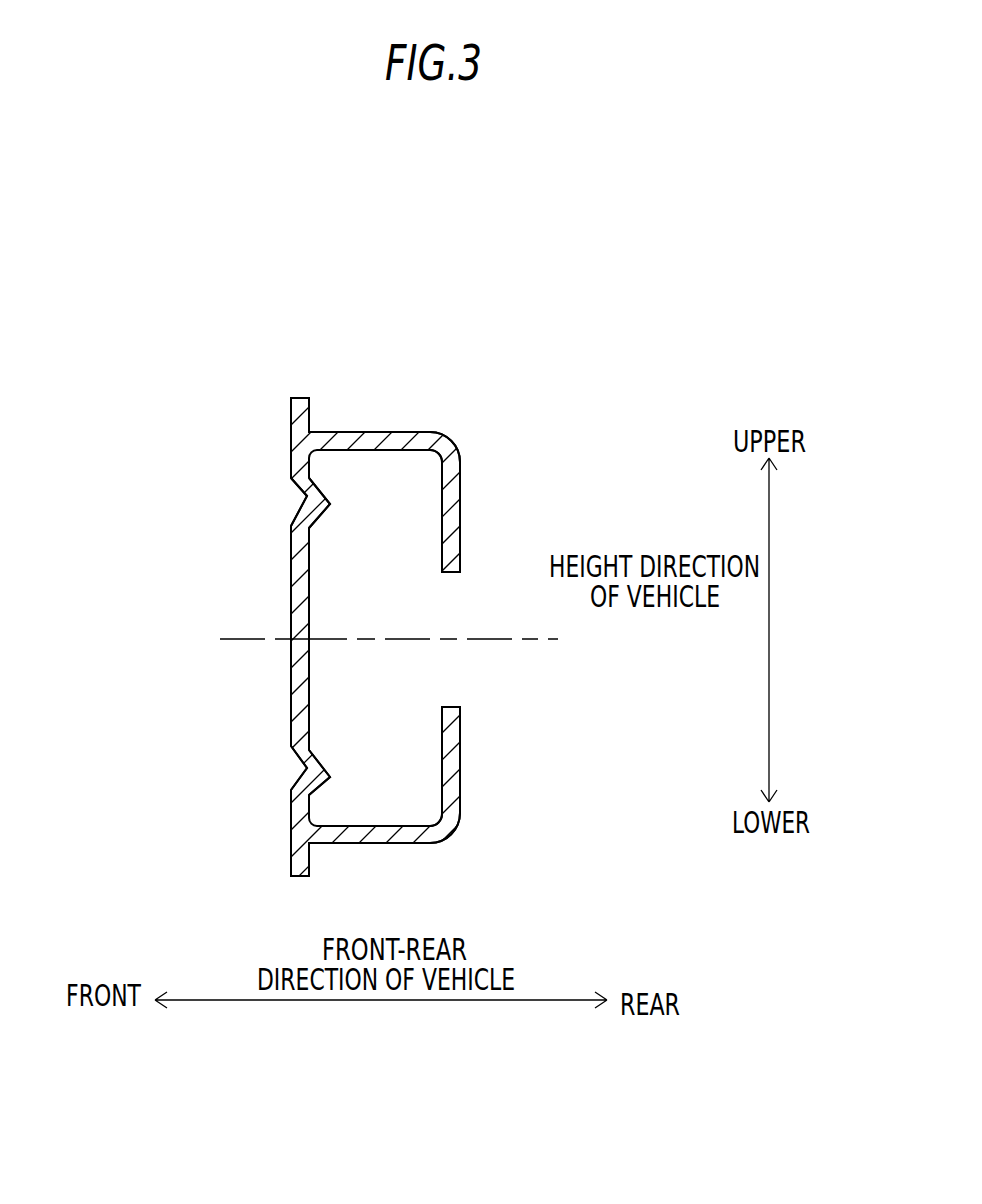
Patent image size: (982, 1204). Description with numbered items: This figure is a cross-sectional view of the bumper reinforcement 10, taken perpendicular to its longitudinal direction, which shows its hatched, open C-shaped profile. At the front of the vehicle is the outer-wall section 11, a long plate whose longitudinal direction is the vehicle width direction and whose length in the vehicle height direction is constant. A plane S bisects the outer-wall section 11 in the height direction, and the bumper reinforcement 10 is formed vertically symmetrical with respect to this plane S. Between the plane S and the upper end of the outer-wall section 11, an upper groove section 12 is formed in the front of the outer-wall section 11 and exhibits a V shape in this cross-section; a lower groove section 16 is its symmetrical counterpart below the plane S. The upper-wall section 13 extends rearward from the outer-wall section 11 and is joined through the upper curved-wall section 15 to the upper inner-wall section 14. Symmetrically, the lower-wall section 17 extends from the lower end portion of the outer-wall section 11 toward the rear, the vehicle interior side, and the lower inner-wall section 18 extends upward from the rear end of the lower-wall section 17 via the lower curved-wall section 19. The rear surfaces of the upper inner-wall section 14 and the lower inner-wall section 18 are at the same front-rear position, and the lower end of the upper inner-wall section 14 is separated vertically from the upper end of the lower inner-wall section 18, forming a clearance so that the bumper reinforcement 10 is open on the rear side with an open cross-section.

The bumper reinforcement 10 is at (395, 327).
The outer-wall section 11 is at (291, 455).
The upper groove section 12 is at (300, 508).
The upper-wall section 13 is at (373, 431).
The upper inner-wall section 14 is at (460, 522).
The upper curved-wall section 15 is at (452, 433).
The lower groove section 16 is at (300, 770).
The lower-wall section 17 is at (372, 845).
The lower inner-wall section 18 is at (460, 755).
The lower curved-wall section 19 is at (450, 838).
The plane S is at (494, 636).